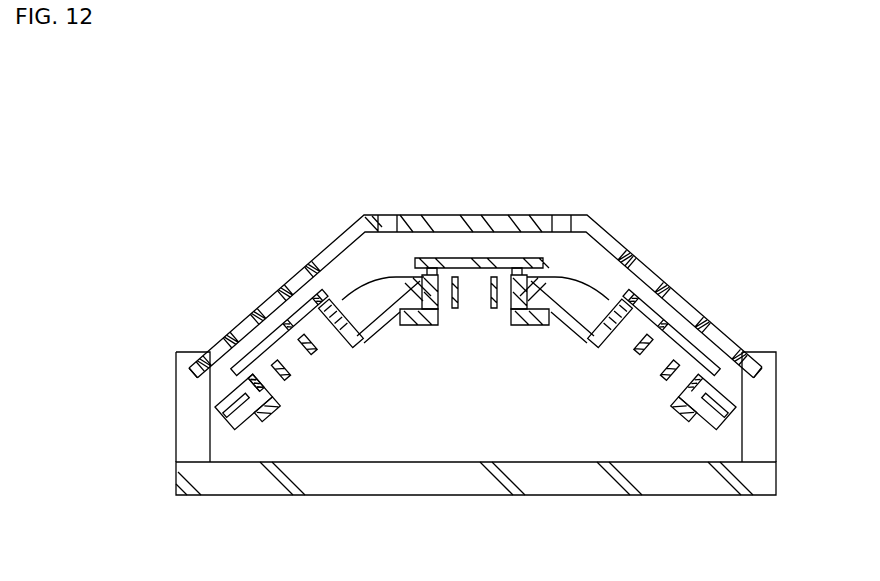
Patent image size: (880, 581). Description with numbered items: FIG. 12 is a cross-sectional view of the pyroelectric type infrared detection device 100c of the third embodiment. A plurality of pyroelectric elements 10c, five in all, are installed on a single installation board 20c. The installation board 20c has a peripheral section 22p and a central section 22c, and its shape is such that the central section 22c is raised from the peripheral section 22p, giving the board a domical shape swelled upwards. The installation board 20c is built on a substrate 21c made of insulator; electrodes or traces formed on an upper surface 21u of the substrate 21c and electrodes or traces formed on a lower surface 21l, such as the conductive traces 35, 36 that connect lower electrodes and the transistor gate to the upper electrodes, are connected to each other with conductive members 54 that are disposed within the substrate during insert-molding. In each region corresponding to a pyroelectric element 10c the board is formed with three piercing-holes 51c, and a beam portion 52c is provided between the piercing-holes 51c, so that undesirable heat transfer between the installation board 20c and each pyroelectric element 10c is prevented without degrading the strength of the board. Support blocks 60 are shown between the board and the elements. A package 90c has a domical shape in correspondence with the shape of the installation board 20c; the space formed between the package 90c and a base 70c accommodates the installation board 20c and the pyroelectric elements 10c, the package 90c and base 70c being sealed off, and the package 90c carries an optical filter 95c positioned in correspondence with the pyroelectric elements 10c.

The electronic device 100c is at (762, 66).
The pyroelectric element 10c is at (257, 339).
The installation board 20c is at (225, 429).
The substrate 21c is at (422, 389).
The upper surface 21u is at (581, 256).
The lower surface 21l is at (592, 313).
The central section 22c is at (378, 213).
The peripheral section 22p is at (725, 425).
The conductive trace 35 is at (380, 344).
The conductive trace 36 is at (271, 412).
The piercing-hole 51c is at (284, 298).
The beam portion 52c is at (347, 340).
The conductive member 54 is at (249, 402).
The support block 60 is at (320, 296).
The base 70c is at (503, 478).
The package 90c is at (340, 231).
The optical filter 95c is at (211, 349).